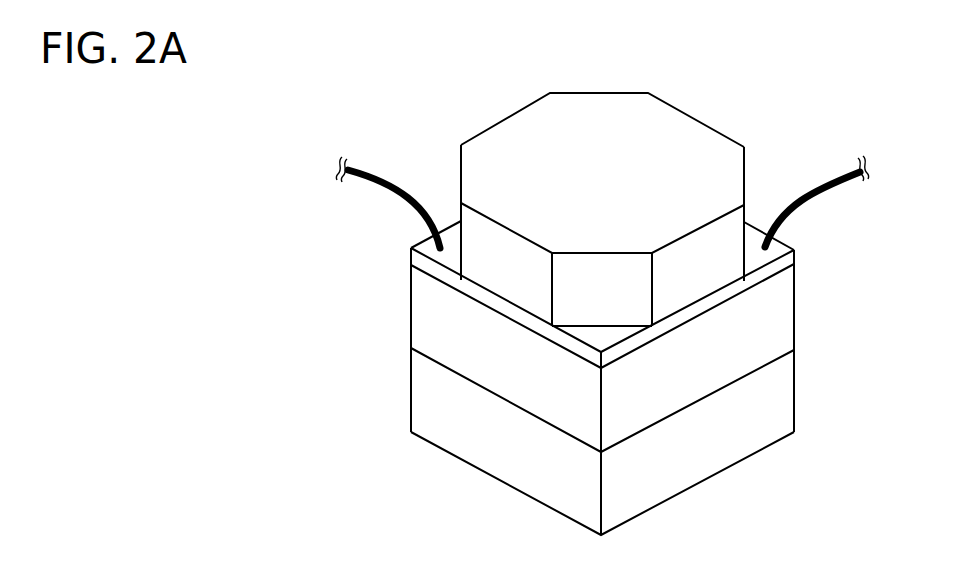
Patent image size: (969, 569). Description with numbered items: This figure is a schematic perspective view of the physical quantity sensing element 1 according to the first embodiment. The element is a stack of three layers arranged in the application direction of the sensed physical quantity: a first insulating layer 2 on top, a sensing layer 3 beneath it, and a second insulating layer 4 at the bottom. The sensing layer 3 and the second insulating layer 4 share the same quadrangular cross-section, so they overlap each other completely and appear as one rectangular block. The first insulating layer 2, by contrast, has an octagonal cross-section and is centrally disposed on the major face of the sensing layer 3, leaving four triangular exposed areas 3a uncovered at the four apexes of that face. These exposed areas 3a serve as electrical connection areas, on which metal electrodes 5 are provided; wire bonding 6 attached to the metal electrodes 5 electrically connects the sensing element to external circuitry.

The physical quantity sensing element 1 is at (815, 92).
The first insulating layer 2 is at (678, 120).
The sensing layer 3 is at (778, 333).
The exposed areas 3a is at (777, 270).
The second insulating layer 4 is at (780, 418).
The metal electrodes 5 is at (796, 260).
The wire bonding 6 is at (832, 177).